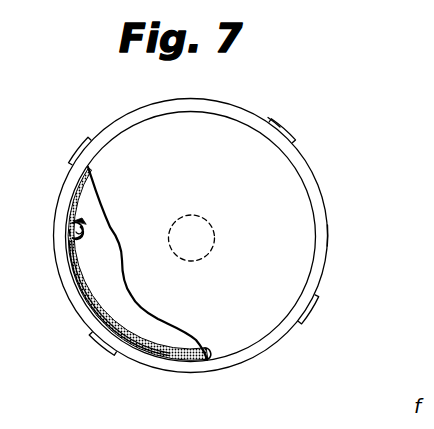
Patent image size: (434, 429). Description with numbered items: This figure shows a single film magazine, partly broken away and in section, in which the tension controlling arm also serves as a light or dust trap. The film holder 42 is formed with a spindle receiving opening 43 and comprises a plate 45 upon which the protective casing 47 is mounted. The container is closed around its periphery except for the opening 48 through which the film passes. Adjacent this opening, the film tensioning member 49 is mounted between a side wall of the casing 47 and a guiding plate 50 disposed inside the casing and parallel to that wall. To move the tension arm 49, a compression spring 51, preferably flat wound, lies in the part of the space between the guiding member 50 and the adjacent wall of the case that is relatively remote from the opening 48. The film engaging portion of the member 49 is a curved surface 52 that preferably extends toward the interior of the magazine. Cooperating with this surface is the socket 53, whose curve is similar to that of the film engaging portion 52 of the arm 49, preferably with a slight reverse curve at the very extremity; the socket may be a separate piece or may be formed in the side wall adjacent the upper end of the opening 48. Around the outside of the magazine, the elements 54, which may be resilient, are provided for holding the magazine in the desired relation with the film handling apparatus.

The film holder 42 is at (293, 180).
The spindle receiving opening 43 is at (203, 216).
The plate 45 is at (326, 229).
The protective casing 47 is at (249, 135).
The opening 48 is at (70, 268).
The film tensioning member 49 is at (77, 286).
The guiding plate 50 is at (118, 330).
The compression spring 51 is at (206, 356).
The curved surface 52 is at (70, 234).
The socket 53 is at (83, 224).
The elements 54 is at (78, 150).